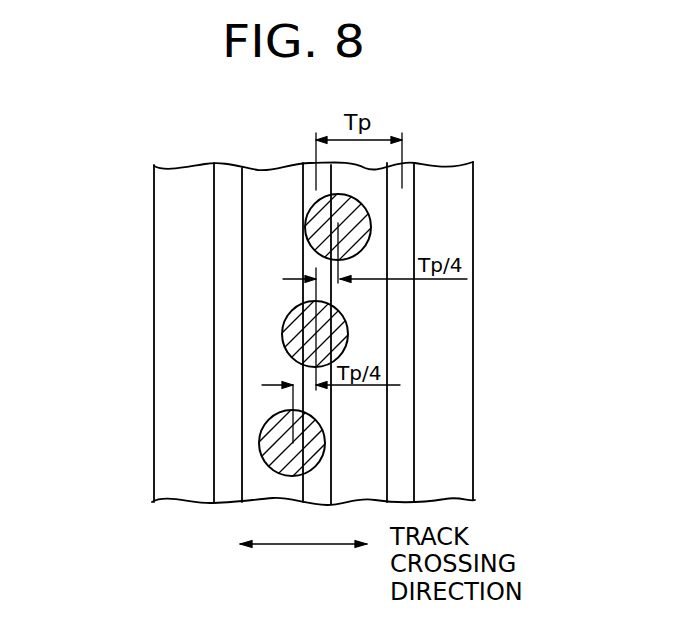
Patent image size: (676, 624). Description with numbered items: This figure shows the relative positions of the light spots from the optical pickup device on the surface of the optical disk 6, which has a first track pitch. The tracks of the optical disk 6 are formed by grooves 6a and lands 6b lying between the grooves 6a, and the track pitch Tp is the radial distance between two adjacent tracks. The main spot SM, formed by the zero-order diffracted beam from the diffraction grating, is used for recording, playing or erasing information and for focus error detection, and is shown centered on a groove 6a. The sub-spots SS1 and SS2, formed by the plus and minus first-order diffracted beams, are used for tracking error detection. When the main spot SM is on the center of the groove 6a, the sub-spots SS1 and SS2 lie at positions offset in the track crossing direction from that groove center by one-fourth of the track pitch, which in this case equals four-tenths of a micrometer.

The optical disk 6 is at (458, 463).
The groove 6a is at (405, 310).
The land 6b is at (253, 272).
The sub-spot SS1 is at (305, 215).
The main spot SM is at (282, 332).
The sub-spot SS2 is at (258, 437).